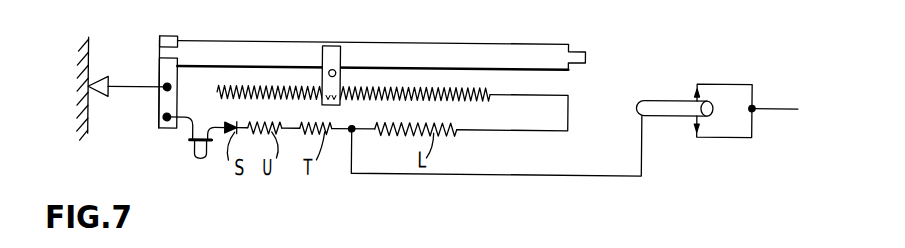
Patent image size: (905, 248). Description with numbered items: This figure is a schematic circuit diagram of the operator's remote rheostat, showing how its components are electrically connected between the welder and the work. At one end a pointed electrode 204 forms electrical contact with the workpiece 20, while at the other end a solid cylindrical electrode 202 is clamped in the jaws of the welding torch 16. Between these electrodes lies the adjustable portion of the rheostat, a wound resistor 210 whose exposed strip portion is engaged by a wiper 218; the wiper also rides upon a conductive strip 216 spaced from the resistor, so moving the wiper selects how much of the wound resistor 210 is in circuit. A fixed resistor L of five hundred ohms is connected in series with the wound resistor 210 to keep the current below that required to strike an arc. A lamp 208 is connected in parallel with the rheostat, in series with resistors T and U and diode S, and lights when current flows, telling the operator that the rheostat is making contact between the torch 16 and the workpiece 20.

The workpiece 20 is at (88, 63).
The pointed electrode 204 is at (100, 95).
The conductive strip 216 is at (272, 33).
The wiper 218 is at (337, 56).
The wound resistor 210 is at (462, 85).
The lamp 208 is at (200, 157).
The solid cylindrical electrode 202 is at (652, 100).
The welding torch 16 is at (732, 78).